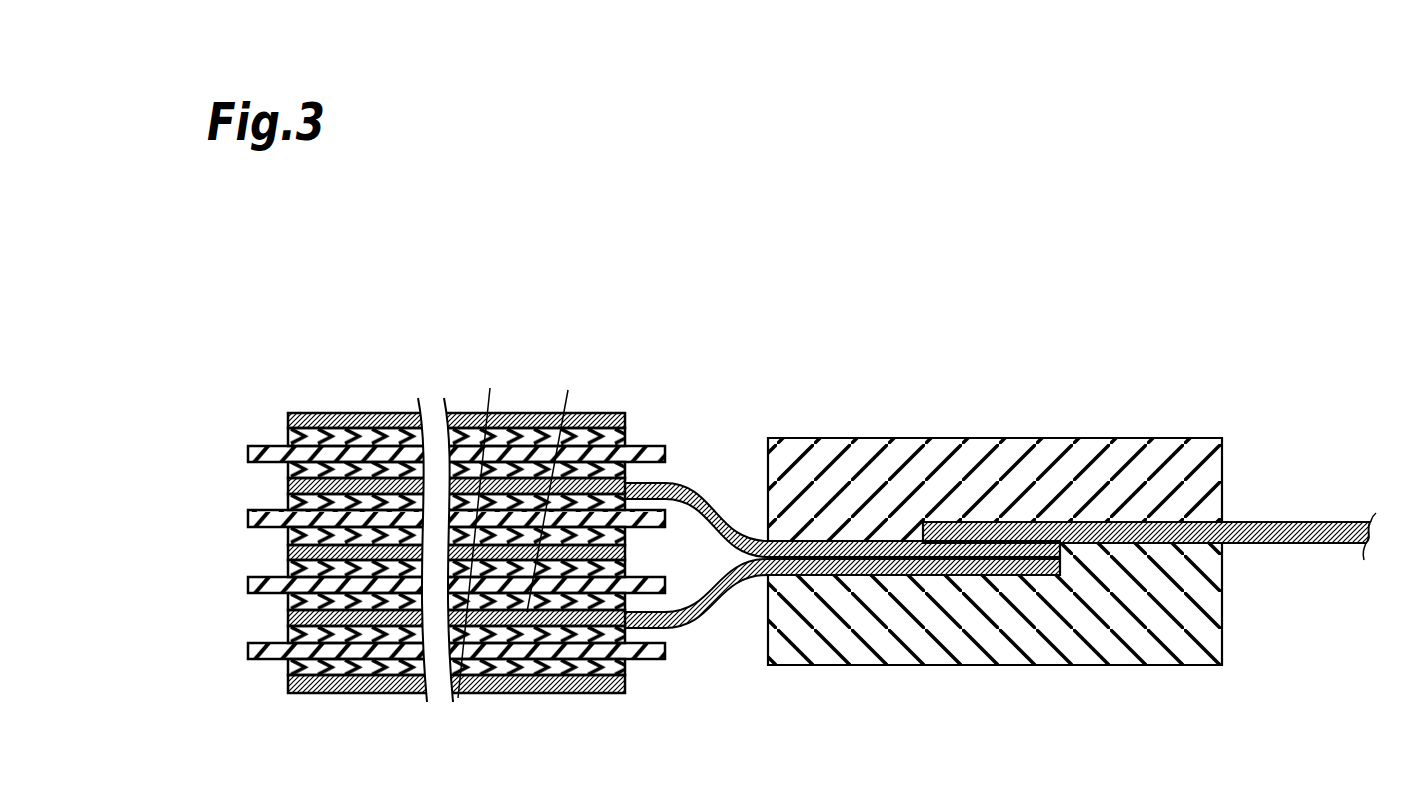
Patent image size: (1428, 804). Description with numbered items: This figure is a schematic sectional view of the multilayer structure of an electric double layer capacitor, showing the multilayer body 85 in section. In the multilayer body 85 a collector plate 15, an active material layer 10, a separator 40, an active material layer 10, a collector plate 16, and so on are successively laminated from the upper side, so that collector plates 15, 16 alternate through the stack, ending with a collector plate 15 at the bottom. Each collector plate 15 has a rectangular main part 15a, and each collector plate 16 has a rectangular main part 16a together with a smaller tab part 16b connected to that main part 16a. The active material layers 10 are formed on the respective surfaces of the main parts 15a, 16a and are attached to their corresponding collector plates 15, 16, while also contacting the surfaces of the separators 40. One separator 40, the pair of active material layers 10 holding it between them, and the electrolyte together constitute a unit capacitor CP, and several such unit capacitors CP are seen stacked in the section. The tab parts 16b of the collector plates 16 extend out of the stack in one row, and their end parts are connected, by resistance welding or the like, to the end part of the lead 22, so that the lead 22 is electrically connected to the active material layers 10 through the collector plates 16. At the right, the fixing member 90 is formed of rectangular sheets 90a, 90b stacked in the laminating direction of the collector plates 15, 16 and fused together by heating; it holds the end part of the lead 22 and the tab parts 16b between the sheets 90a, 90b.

The multilayer body 85 is at (567, 312).
The collector plate 15 is at (288, 420).
The collector plate 16 is at (288, 486).
The active material layer 10 is at (288, 437).
The separator 40 is at (250, 454).
The unit capacitor CP is at (165, 361).
The main part 15a is at (507, 414).
The main part 16a is at (584, 416).
The tab part 16b is at (707, 495).
The fixing member 90 is at (1343, 398).
The rectangular sheet 90a is at (1222, 457).
The rectangular sheet 90b is at (1222, 596).
The lead 22 is at (1313, 547).